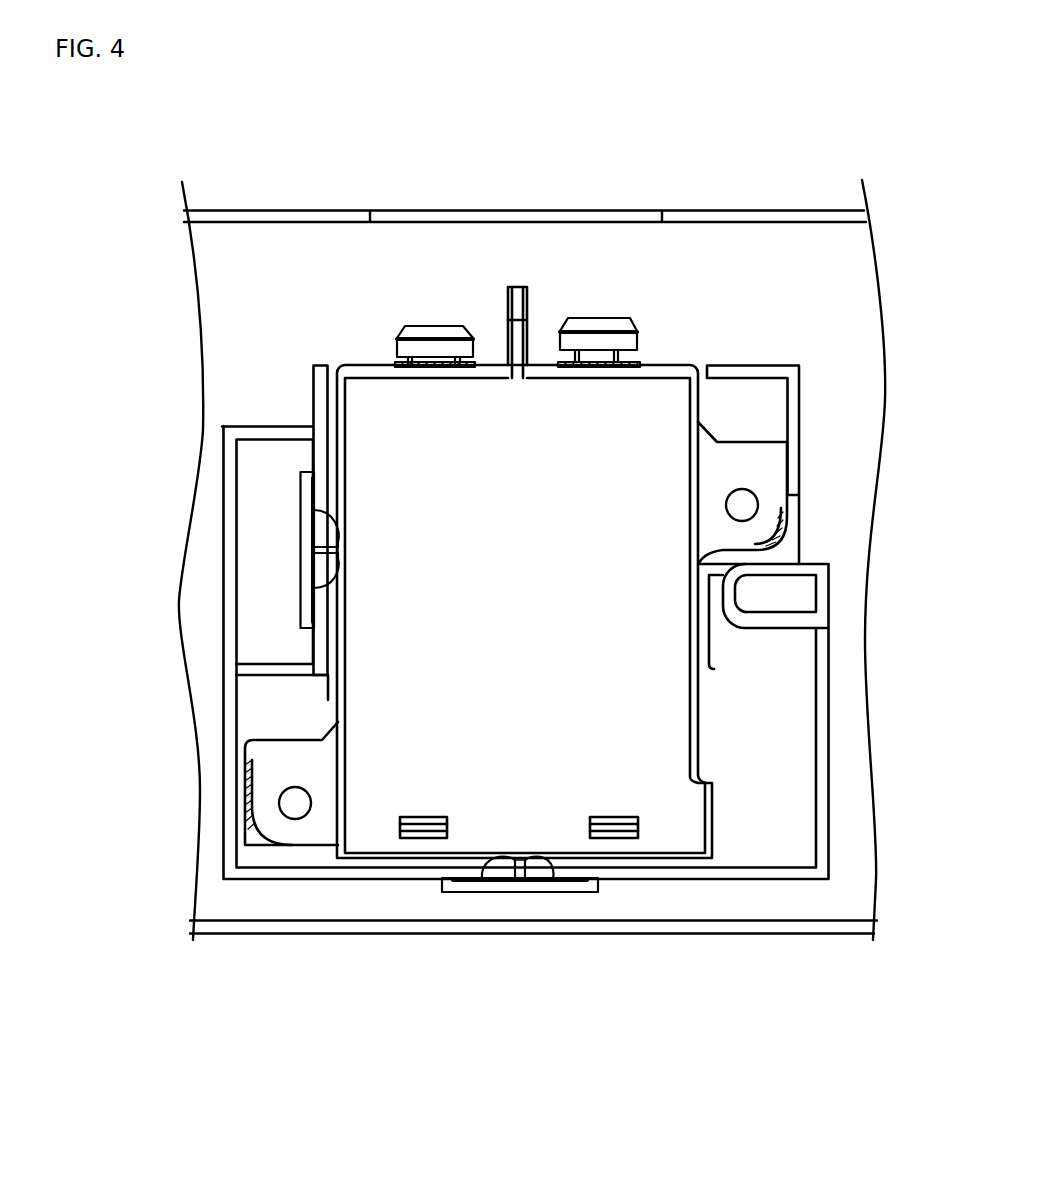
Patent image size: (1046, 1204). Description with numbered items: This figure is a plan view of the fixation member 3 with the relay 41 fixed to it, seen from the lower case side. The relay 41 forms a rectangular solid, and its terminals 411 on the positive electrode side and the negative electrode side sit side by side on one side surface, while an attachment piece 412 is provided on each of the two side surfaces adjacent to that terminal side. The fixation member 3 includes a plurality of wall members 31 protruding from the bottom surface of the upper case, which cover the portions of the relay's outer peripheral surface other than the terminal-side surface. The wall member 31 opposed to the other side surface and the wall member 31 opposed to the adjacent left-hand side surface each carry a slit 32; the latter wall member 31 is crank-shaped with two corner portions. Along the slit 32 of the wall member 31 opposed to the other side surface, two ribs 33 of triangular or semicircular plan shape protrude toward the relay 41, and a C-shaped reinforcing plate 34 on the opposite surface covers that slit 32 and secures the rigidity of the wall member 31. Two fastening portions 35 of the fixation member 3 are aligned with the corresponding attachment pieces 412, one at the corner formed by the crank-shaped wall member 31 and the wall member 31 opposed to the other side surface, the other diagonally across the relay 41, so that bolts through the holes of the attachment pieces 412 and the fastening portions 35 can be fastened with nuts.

The fixation member 3 is at (215, 861).
The wall member 31 is at (320, 467).
The slit 32 is at (337, 556).
The rib 33 is at (334, 535).
The reinforcing plate 34 is at (303, 478).
The fastening portion 35 is at (262, 833).
The relay 41 is at (495, 405).
The terminal 411 is at (418, 343).
The attachment piece 412 is at (281, 737).